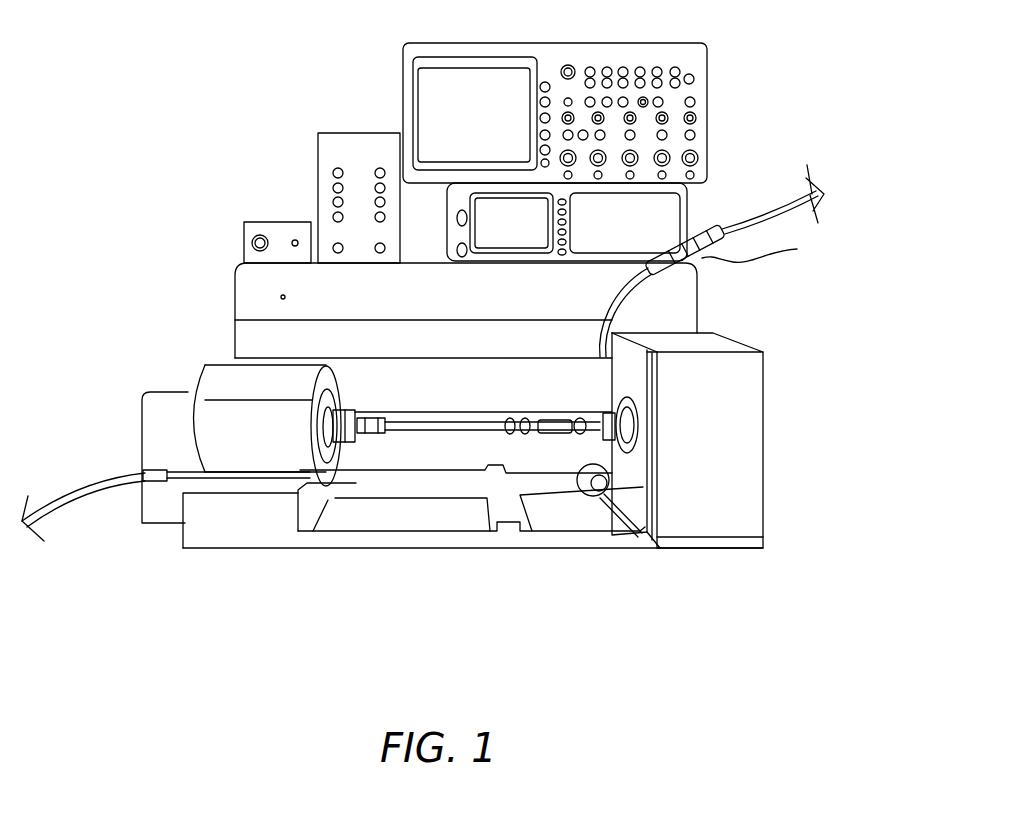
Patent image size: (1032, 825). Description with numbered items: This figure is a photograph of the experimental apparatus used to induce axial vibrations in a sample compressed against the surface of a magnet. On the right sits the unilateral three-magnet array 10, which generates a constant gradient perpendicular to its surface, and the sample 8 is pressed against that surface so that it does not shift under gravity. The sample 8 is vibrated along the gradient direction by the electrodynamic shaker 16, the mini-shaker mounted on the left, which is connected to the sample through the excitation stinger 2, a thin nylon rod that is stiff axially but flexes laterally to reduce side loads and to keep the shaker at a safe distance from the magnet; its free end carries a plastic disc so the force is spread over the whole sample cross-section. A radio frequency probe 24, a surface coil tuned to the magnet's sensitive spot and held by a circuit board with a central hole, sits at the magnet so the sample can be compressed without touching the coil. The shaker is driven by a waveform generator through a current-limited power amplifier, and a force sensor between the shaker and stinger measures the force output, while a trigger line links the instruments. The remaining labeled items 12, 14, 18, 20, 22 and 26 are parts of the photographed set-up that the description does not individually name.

The excitation stinger 2 is at (462, 425).
The sample 8 is at (642, 436).
The unilateral three-magnet array 10 is at (748, 350).
The controller box 12 is at (330, 150).
The small connector box 14 is at (247, 223).
The electrodynamic shaker 16 is at (215, 387).
The cable 18 is at (152, 482).
The trigger line cable 20 is at (688, 206).
The base 22 is at (250, 295).
The radio frequency probe 24 is at (642, 463).
The coupling 26 is at (345, 432).